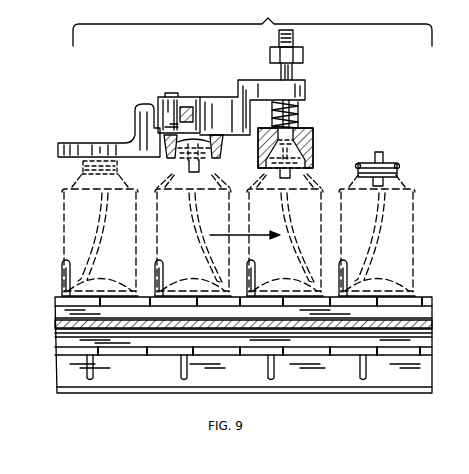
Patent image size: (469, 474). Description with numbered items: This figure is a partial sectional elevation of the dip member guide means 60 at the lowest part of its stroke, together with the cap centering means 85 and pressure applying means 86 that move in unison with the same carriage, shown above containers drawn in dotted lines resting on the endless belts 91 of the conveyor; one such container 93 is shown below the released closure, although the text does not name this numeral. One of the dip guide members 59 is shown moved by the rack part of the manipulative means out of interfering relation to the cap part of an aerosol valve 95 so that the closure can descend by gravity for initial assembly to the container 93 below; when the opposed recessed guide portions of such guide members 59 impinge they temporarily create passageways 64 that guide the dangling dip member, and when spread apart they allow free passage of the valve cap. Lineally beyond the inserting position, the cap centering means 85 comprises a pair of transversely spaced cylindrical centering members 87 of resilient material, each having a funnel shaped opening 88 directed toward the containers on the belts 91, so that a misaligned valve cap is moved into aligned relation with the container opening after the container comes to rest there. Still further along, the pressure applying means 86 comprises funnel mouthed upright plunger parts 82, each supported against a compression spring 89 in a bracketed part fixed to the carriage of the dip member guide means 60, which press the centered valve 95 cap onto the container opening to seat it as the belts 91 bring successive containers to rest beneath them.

The dip guide member 59 is at (125, 143).
The dip member guide means 60 is at (210, 97).
The passageway 64 is at (153, 108).
The plunger part 82 is at (294, 68).
The cap centering means 85 is at (216, 146).
The pressure applying means 86 is at (295, 40).
The centering member 87 is at (172, 158).
The funnel shaped opening 88 is at (214, 158).
The compression spring 89 is at (300, 114).
The endless belt 91 is at (130, 298).
The bottle 93 is at (379, 221).
The aerosol valve 95 is at (388, 166).